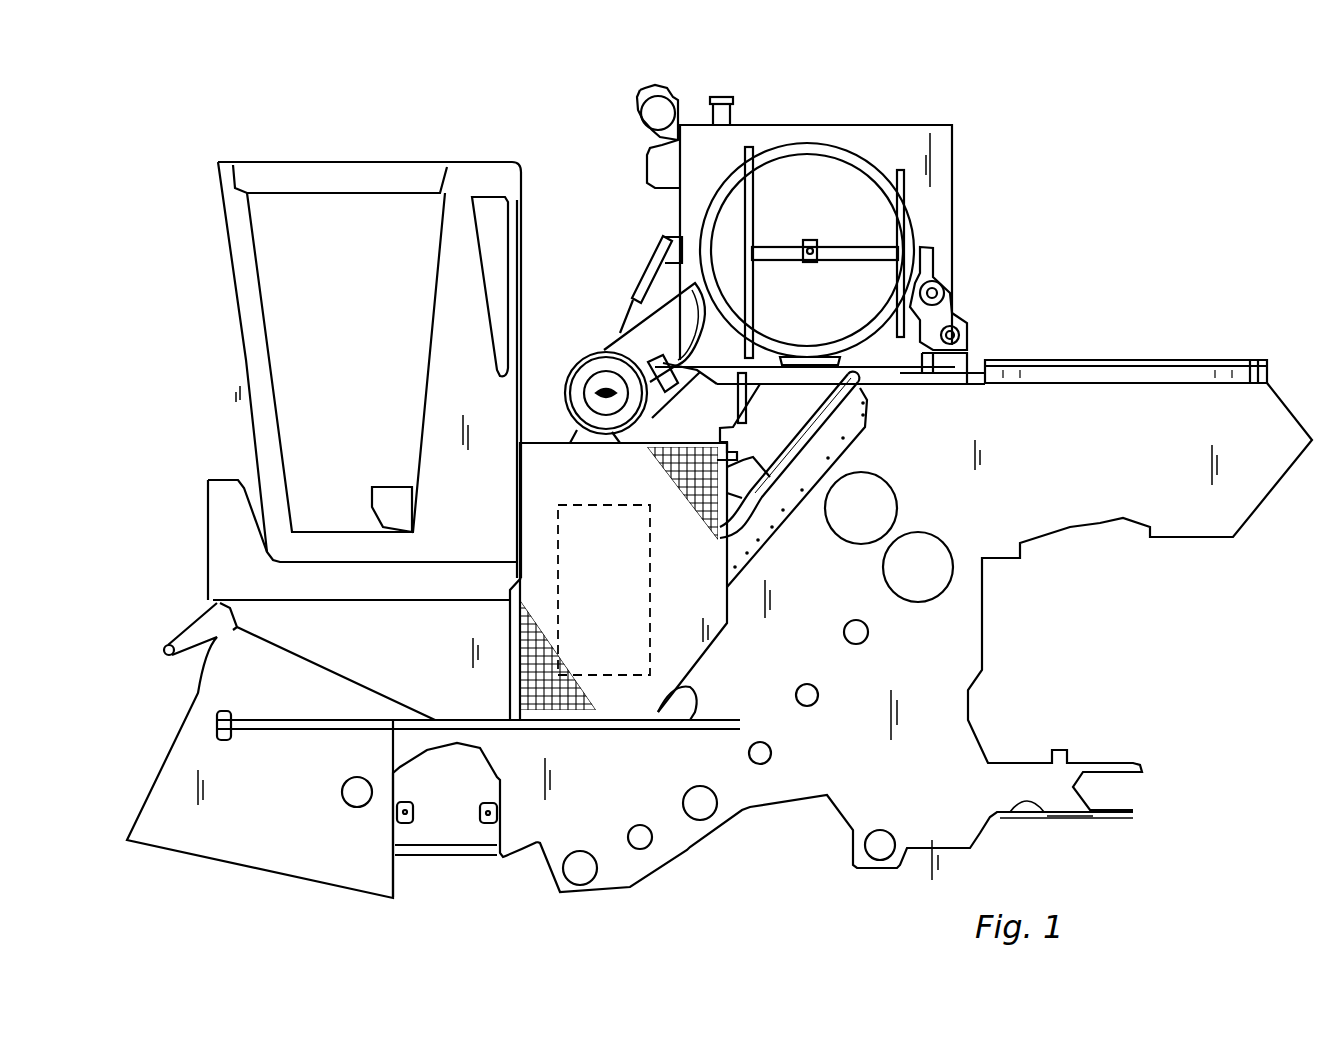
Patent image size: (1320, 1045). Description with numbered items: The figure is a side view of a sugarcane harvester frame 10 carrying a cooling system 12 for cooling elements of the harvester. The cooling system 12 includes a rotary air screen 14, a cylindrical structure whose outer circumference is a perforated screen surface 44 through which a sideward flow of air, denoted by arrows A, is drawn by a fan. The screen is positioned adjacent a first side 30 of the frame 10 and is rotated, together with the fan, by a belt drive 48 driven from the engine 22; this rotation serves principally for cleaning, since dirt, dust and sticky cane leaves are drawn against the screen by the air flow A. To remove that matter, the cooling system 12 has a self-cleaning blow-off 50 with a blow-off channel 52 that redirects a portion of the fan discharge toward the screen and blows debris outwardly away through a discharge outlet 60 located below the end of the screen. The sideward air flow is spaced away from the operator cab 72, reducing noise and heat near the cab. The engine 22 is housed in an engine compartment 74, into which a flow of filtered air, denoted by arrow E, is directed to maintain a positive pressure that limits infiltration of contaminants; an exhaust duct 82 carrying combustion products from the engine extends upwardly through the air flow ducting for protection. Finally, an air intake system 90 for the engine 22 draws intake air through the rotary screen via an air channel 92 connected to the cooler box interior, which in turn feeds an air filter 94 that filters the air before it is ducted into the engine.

The sugarcane harvester frame 10 is at (1132, 116).
The cooling system 12 is at (965, 116).
The rotary air screen 14 is at (827, 214).
The perforated screen surface 44 is at (857, 148).
The engine 22 is at (602, 677).
The first side 30 is at (1130, 393).
The belt drive 48 is at (967, 320).
The self-cleaning blow-off 50 is at (805, 480).
The blow-off channel 52 is at (805, 480).
The discharge outlet 60 is at (803, 367).
The operator cab 72 is at (375, 160).
The engine compartment 74 is at (683, 723).
The exhaust duct 82 is at (710, 107).
The air intake system 90 is at (562, 400).
The air channel 92 is at (643, 290).
The air filter 94 is at (577, 357).
The air flow arrows A is at (773, 140).
The filtered air flow arrow E is at (683, 400).